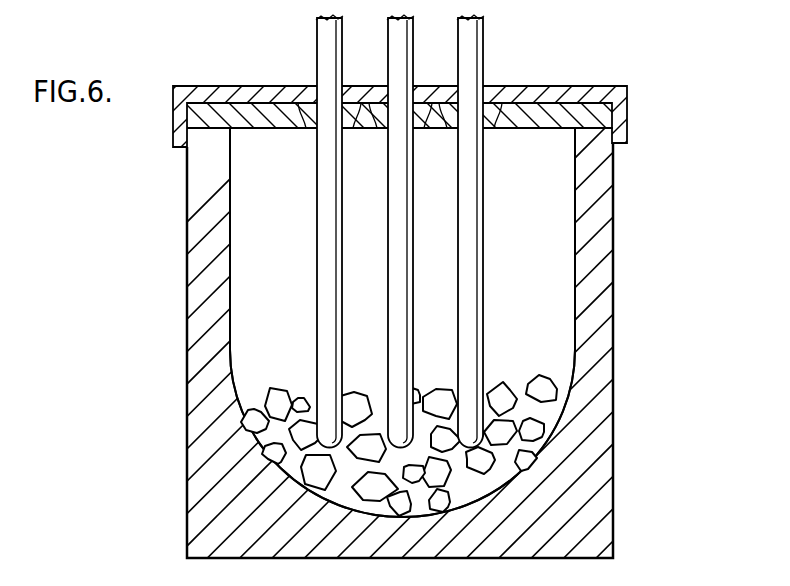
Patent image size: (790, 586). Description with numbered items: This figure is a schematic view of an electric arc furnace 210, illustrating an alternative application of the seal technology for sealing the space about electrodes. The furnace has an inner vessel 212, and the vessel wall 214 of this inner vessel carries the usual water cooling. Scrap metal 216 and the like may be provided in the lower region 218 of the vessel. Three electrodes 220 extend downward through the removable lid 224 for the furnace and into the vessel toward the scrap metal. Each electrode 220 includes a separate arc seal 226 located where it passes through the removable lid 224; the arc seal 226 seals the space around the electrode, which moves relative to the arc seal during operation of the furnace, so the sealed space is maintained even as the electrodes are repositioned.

The electric arc furnace 210 is at (630, 316).
The inner vessel 212 is at (595, 270).
The vessel wall 214 is at (576, 372).
The scrap metal 216 is at (292, 449).
The lower region 218 is at (287, 476).
The electrodes 220 is at (318, 200).
The removable lid 224 is at (543, 101).
The arc seal 226 is at (307, 108).